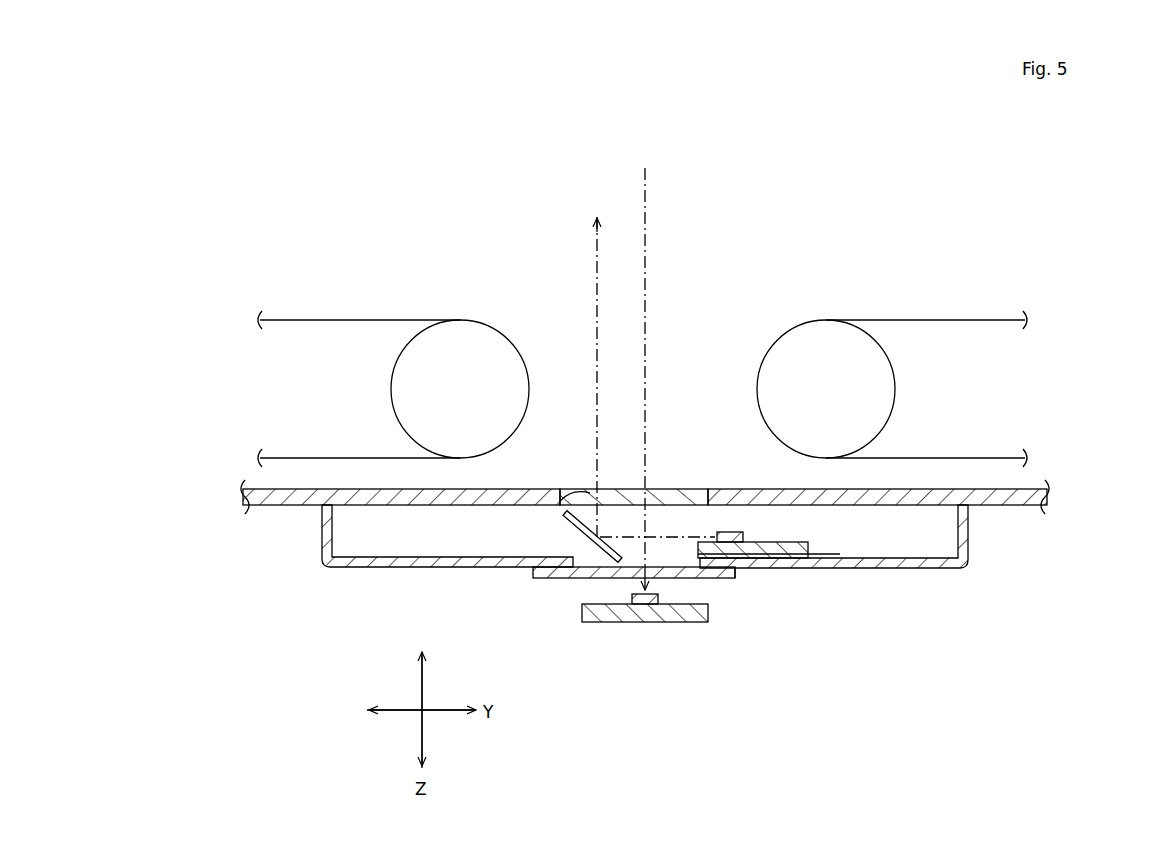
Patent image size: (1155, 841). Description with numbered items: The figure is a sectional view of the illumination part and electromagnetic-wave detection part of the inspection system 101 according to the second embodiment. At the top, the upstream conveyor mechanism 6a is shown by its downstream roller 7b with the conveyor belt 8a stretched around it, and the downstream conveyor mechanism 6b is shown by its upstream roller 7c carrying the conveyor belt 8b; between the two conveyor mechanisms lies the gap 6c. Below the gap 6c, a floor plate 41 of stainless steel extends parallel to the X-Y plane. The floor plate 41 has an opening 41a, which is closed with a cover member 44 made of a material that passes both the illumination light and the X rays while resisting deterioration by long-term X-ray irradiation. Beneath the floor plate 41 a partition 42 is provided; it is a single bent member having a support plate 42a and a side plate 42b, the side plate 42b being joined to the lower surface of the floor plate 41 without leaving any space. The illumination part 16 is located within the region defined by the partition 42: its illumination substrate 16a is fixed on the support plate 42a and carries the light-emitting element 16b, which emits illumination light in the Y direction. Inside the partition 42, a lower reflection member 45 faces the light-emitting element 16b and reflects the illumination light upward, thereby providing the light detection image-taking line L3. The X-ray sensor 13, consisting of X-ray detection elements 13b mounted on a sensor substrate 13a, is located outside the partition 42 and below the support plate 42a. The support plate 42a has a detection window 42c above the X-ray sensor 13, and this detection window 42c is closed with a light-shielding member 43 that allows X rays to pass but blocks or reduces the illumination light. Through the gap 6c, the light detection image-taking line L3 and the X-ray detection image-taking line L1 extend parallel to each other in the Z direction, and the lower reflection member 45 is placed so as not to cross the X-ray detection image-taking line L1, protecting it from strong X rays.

The inspection system 101 is at (447, 180).
The upstream conveyor mechanism 6a is at (925, 293).
The downstream conveyor mechanism 6b is at (373, 278).
The gap 6c is at (693, 356).
The downstream roller 7b is at (800, 350).
The upstream roller 7c is at (460, 345).
The conveyor belt 8a is at (985, 320).
The conveyor belt 8b is at (326, 318).
The X-ray sensor 13 is at (632, 644).
The sensor substrate 13a is at (597, 622).
The X-ray detection element 13b is at (615, 622).
The illumination part 16 is at (785, 581).
The illumination substrate 16a is at (808, 552).
The light-emitting element 16b is at (740, 537).
The floor plate 41 is at (645, 487).
The opening 41a is at (572, 489).
The partition 42 is at (624, 576).
The support plate 42a is at (915, 568).
The side plate 42b is at (325, 527).
The detection window 42c is at (565, 578).
The light-shielding member 43 is at (720, 578).
The cover member 44 is at (690, 489).
The lower reflection member 45 is at (568, 535).
The X-ray detection image-taking line L1 is at (645, 193).
The light detection image-taking line L3 is at (597, 283).